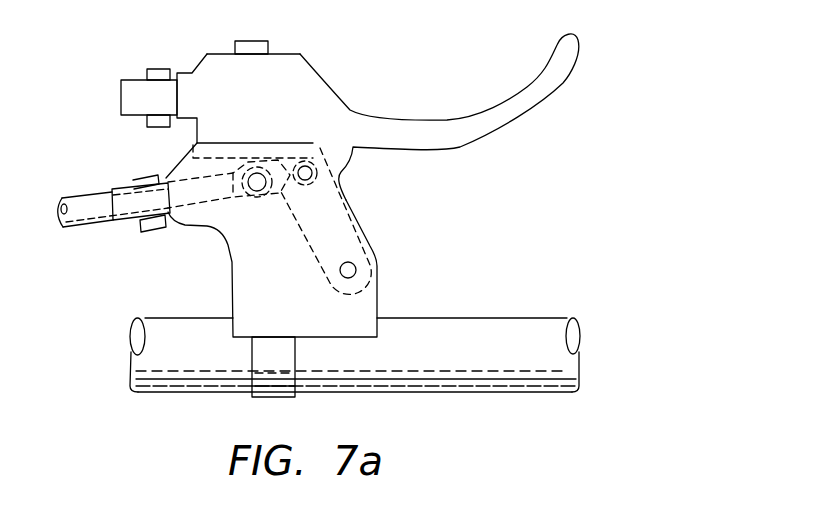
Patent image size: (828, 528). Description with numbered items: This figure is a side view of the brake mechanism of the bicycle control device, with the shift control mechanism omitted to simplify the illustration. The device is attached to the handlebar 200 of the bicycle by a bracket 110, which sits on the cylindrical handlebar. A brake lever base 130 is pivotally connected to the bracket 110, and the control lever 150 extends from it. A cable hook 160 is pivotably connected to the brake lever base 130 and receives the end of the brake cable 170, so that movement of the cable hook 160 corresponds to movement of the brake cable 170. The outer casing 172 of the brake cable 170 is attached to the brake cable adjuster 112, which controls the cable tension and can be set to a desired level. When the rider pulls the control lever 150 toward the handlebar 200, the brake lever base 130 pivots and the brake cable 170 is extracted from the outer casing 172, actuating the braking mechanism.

The bracket 110 is at (368, 303).
The brake cable adjuster 112 is at (140, 176).
The brake lever base 130 is at (350, 240).
The control lever 150 is at (497, 124).
The cable hook 160 is at (293, 188).
The brake cable 170 is at (218, 197).
The outer casing 172 is at (75, 198).
The handlebar 200 is at (490, 373).